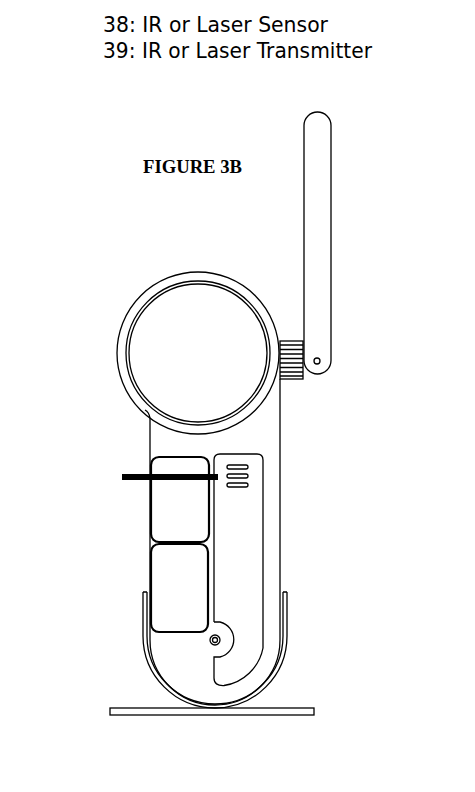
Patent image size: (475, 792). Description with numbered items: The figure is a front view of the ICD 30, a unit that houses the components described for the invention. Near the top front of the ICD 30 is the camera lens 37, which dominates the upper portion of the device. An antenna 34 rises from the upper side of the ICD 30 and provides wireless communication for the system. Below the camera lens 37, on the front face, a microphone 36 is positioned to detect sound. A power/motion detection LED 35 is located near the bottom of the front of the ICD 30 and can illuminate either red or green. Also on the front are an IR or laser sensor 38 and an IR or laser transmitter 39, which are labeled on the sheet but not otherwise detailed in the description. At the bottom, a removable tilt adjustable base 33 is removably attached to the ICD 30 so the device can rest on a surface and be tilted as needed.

The ICD 30 is at (133, 263).
The removable tilt adjustable base 33 is at (288, 656).
The antennas 34 is at (343, 140).
The power/motion detection LED 35 is at (202, 637).
The microphone 36 is at (250, 478).
The camera lens 37 is at (160, 351).
The IR or laser sensor 38 is at (180, 496).
The IR or laser transmitter 39 is at (180, 583).